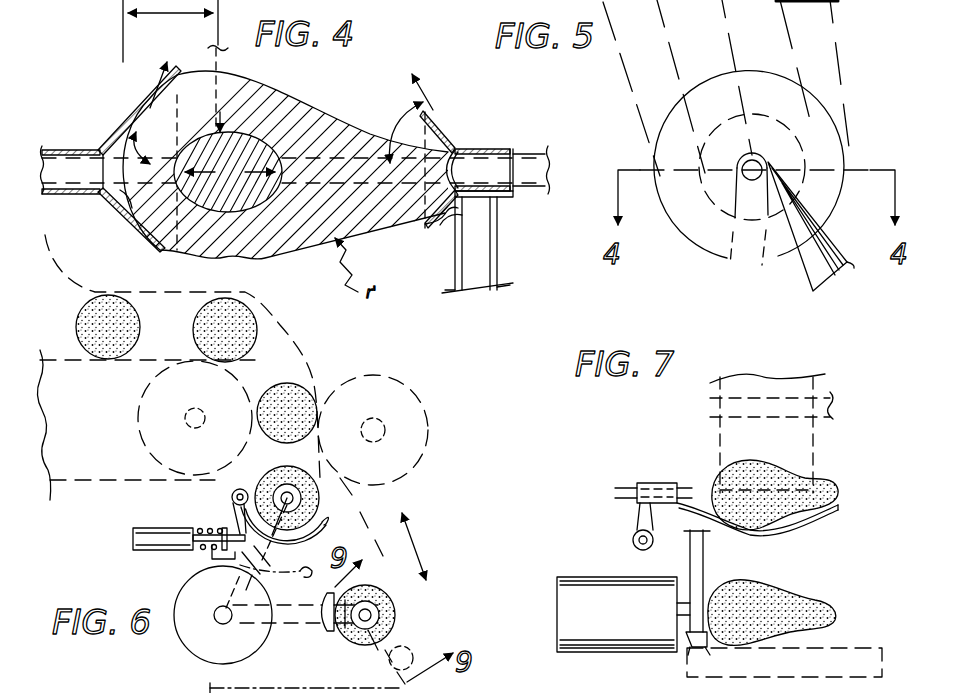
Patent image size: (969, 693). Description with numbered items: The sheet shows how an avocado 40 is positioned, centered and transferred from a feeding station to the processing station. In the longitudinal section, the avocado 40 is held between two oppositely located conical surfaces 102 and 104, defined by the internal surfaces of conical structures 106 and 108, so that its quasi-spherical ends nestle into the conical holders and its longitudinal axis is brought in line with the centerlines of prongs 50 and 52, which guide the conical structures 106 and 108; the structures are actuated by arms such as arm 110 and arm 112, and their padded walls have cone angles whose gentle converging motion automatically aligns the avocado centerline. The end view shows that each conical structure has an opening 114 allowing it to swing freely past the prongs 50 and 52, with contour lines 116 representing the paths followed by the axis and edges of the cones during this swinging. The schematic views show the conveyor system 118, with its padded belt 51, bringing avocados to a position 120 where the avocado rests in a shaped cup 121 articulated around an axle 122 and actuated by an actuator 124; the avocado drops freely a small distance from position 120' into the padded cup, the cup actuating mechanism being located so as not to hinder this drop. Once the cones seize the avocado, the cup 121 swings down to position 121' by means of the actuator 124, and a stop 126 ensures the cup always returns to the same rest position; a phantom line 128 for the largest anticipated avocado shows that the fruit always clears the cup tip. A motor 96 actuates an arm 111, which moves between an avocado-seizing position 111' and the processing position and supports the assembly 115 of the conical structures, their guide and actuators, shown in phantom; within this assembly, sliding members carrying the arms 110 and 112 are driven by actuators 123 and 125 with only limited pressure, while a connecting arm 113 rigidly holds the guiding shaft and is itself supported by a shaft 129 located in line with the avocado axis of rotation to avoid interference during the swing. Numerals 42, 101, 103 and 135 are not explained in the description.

In FIG. 4, the avocado 40 is at (305, 104).
In FIG. 6, the avocado 40 is at (400, 618).
In FIG. 7, the avocado 40 is at (790, 593).
In FIG. 4, the core of ball 42 is at (282, 225).
In FIG. 4, the prong 50 is at (520, 157).
In FIG. 5, the prong 50 is at (752, 182).
In FIG. 6, the belt 51 is at (282, 687).
In FIG. 4, the prong 52 is at (68, 150).
In FIG. 6, the motor 96 is at (190, 645).
In FIG. 7, the motor 96 is at (628, 620).
In FIG. 4, the nozzle throat 101 is at (106, 206).
In FIG. 4, the conical surface 102 is at (112, 203).
In FIG. 4, the outlet lip 103 is at (447, 145).
In FIG. 4, the conical surface 104 is at (445, 212).
In FIG. 4, the conical structure 106 is at (112, 128).
In FIG. 5, the conical structure 106 is at (702, 253).
In FIG. 4, the conical structure 108 is at (473, 147).
In FIG. 5, the conical structure 108 is at (705, 195).
In FIG. 4, the arm 110 is at (500, 247).
In FIG. 6, the arm 111 is at (305, 624).
In FIG. 7, the arm 111 is at (720, 588).
In FIG. 6, the avocado-seizing position of arm 111' is at (283, 554).
In FIG. 5, the arm 112 is at (798, 273).
In FIG. 7, the arm 112 is at (632, 483).
In FIG. 6, the connecting arm 113 is at (395, 645).
In FIG. 7, the connecting arm 113 is at (707, 638).
In FIG. 5, the opening 114 is at (745, 257).
In FIG. 6, the assembly of the conical structures 115 is at (390, 663).
In FIG. 7, the assembly of the conical structures 115 is at (850, 648).
In FIG. 5, the contour lines 116 is at (837, 22).
In FIG. 6, the conveyor system 118 is at (60, 363).
In FIG. 7, the conveyor system 118 is at (717, 417).
In FIG. 6, the avocado position 120 is at (287, 491).
In FIG. 7, the avocado position 120 is at (793, 481).
In FIG. 6, the avocado position 120' is at (206, 369).
In FIG. 6, the shaped cup 121 is at (318, 520).
In FIG. 7, the shaped cup 121 is at (771, 523).
In FIG. 6, the cup position 121' is at (301, 554).
In FIG. 6, the axle 122 is at (231, 497).
In FIG. 7, the actuator 123 is at (635, 688).
In FIG. 6, the actuator 124 is at (145, 528).
In FIG. 7, the actuator 124 is at (632, 541).
In FIG. 7, the actuator 125 is at (720, 688).
In FIG. 6, the stop 126 is at (210, 556).
In FIG. 6, the phantom line 128 is at (332, 643).
In FIG. 6, the shaft 129 is at (382, 604).
In FIG. 4, the reference plane 135 is at (224, 57).